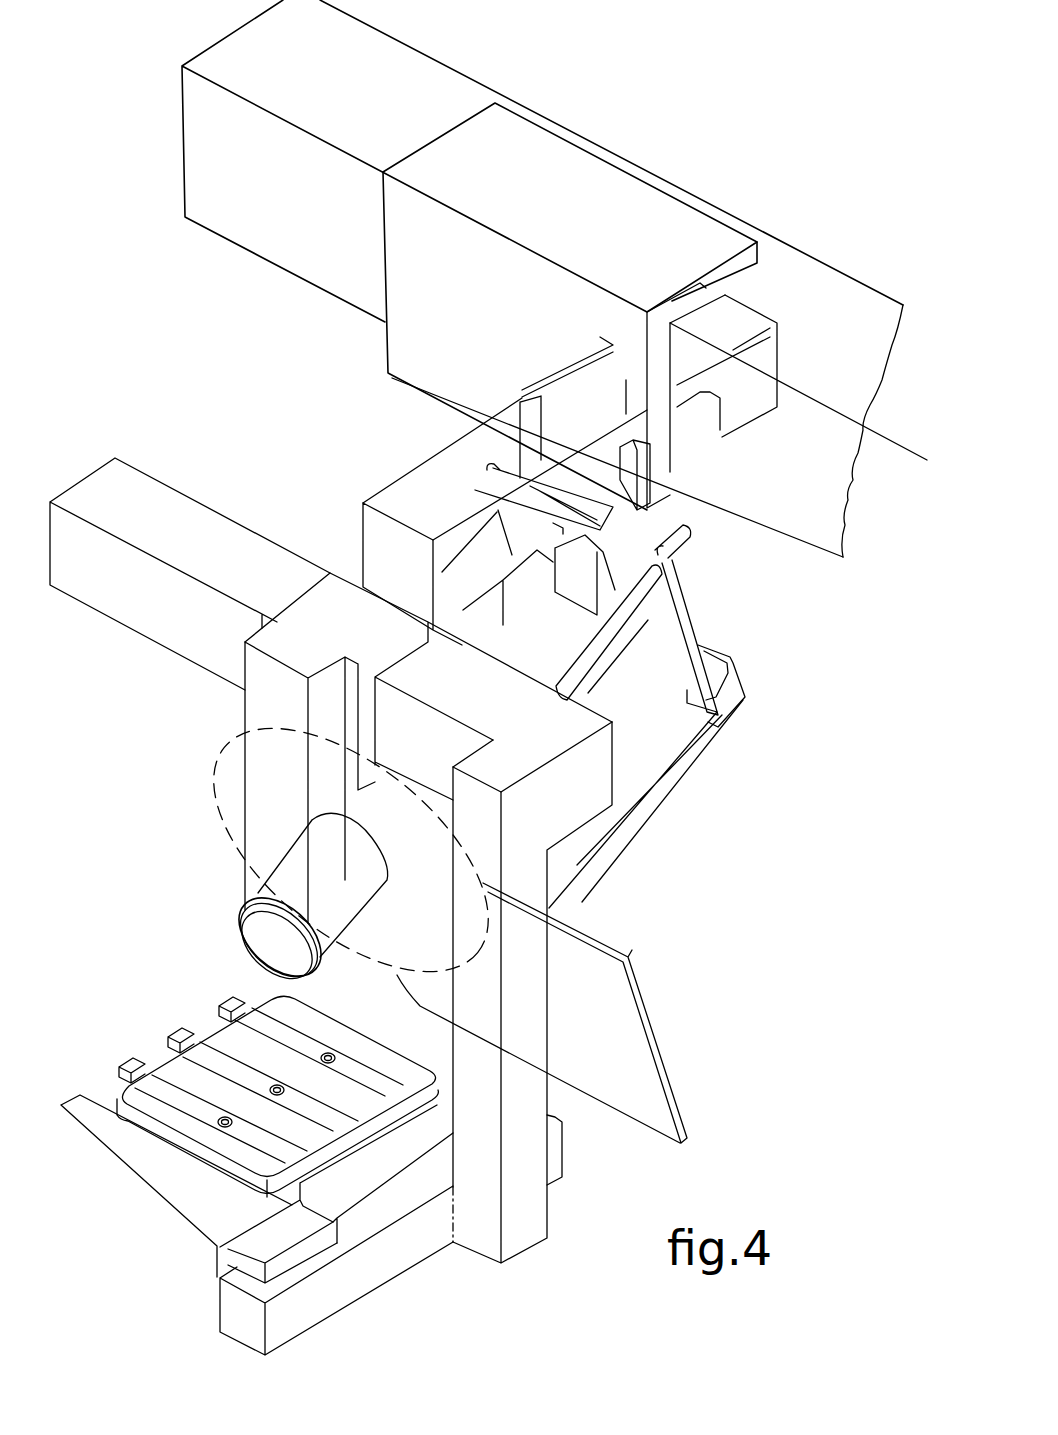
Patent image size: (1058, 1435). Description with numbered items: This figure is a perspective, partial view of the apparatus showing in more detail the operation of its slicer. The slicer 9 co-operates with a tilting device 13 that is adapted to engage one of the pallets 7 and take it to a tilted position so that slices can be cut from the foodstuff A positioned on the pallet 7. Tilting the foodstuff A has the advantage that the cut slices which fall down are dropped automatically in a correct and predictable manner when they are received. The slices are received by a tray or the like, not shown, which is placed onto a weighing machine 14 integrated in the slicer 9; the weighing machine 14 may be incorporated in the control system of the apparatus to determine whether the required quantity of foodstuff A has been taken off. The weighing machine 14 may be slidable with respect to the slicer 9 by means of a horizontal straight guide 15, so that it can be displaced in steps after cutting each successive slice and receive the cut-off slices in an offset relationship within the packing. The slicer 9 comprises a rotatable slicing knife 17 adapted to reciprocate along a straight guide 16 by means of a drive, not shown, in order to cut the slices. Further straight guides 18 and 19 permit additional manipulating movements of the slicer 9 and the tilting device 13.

The pallet 7 is at (647, 803).
The slicer 9 is at (226, 863).
The tilting device 13 is at (718, 512).
The weighing machine 14 is at (236, 1071).
The horizontal straight guide 15 is at (310, 1265).
The straight guide 16 is at (342, 613).
The rotatable slicing knife 17 is at (216, 786).
The straight guide 18 is at (746, 280).
The straight guide 19 is at (722, 379).
The foodstuff A is at (632, 730).